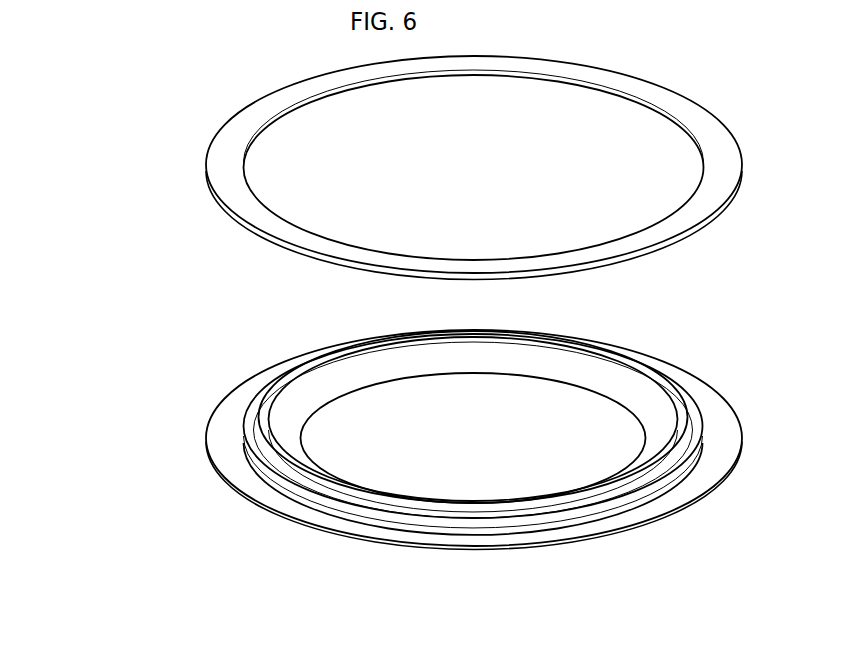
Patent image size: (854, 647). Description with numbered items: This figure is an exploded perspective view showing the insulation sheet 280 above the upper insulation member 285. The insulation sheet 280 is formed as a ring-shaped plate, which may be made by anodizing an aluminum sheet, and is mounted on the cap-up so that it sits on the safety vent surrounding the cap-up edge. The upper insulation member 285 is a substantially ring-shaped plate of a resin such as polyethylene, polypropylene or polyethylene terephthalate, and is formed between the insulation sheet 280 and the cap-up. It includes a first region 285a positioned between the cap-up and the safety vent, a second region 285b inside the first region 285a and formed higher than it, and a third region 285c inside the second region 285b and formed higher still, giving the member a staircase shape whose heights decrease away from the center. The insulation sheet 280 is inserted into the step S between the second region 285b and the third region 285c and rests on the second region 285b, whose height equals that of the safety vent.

The insulation sheet 280 is at (220, 165).
The upper insulation member 285 is at (389, 467).
The first region 285a is at (220, 417).
The second region 285b is at (252, 440).
The third region 285c is at (275, 455).
The step S is at (310, 487).